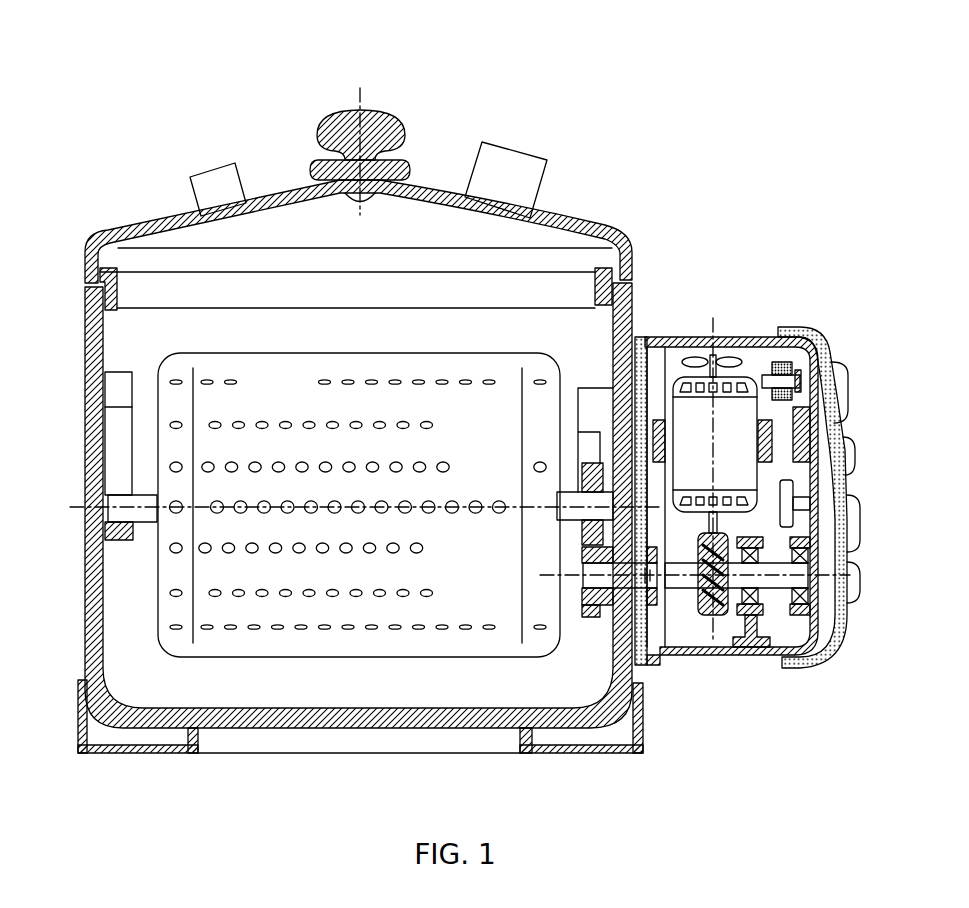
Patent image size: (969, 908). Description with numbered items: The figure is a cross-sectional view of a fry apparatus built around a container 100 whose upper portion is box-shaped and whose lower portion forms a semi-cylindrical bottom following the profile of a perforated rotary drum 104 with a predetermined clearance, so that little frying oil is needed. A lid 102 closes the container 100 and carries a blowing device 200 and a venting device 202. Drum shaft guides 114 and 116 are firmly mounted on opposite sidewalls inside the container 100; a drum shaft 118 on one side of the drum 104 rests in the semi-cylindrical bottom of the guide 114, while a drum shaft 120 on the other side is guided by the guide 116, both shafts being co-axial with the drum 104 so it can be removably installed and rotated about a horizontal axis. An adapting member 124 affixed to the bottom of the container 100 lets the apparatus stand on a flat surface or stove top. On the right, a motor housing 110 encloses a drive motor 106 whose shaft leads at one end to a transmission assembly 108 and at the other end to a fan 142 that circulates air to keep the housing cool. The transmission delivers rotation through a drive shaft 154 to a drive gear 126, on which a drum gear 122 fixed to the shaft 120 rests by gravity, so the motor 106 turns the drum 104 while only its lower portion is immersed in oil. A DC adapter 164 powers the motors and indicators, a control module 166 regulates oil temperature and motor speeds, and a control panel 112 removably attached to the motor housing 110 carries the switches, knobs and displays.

The container 100 is at (92, 440).
The lid 102 is at (118, 236).
The perforated rotary drum 104 is at (252, 398).
The drive motor 106 is at (677, 407).
The transmission assembly 108 is at (694, 626).
The motor housing 110 is at (768, 337).
The control panel 112 is at (813, 670).
The drum shaft guide 114 is at (122, 397).
The drum shaft guide 116 is at (597, 410).
The drum shaft 118 is at (97, 510).
The drum shaft 120 is at (567, 500).
The drum gear 122 is at (578, 482).
The adapting member 124 is at (80, 713).
The drive gear 126 is at (583, 600).
The fan 142 is at (727, 357).
The drive shaft 154 is at (593, 570).
The DC adapter 164 is at (793, 366).
The control module 166 is at (790, 500).
The blowing device 200 is at (553, 178).
The venting device 202 is at (245, 125).